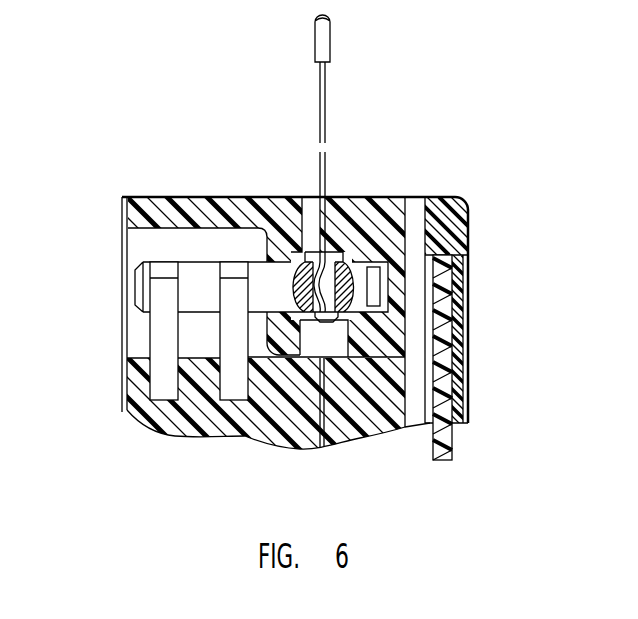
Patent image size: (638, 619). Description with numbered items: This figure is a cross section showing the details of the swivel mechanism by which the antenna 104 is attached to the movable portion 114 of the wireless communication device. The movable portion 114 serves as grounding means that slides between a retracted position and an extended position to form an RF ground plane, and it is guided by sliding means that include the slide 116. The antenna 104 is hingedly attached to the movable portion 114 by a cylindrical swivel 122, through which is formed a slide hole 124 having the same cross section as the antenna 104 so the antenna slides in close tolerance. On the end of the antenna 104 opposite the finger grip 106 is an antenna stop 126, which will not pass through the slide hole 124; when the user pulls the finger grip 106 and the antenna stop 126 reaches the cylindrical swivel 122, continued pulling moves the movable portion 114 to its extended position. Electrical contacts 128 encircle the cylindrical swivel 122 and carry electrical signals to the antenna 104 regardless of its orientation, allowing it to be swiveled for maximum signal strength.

The antenna 104 is at (323, 122).
The finger grip 106 is at (323, 37).
The movable portion 114 is at (463, 304).
The slide 116 is at (447, 438).
The cylindrical swivel 122 is at (190, 268).
The slide hole 124 is at (332, 250).
The antenna stop 126 is at (323, 322).
The electrical contacts 128 is at (165, 297).